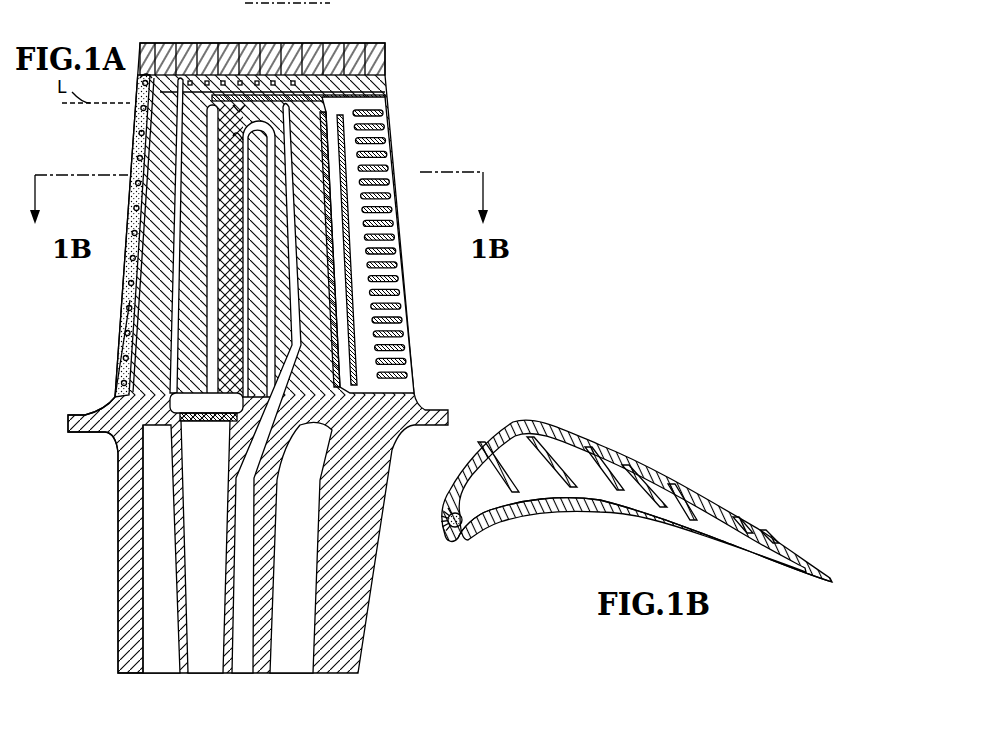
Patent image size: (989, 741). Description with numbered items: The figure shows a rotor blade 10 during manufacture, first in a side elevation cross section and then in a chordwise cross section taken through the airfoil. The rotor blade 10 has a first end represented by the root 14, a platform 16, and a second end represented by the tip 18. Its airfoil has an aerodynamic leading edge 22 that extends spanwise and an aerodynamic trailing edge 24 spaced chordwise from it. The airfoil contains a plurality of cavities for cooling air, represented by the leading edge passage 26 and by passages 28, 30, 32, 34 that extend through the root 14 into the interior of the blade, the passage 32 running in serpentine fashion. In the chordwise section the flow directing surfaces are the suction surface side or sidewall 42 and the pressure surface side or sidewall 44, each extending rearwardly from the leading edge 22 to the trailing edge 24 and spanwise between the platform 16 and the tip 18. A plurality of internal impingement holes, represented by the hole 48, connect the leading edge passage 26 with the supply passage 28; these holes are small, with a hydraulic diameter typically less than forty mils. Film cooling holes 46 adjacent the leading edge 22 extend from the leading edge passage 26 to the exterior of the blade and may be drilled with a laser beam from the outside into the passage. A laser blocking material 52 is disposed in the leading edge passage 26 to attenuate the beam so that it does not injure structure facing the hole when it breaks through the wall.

In FIG. 1A, the rotor blade 10 is at (438, 54).
In FIG. 1A, the root 14 is at (118, 538).
In FIG. 1A, the platform 16 is at (68, 413).
In FIG. 1A, the tip 18 is at (362, 43).
In FIG. 1A, the aerodynamic leading edge 22 is at (118, 290).
In FIG. 1A, the aerodynamic trailing edge 24 is at (410, 290).
In FIG. 1A, the leading edge passage 26 is at (116, 370).
In FIG. 1A, the supply passage 28 is at (166, 658).
In FIG. 1A, the passage 30 is at (205, 658).
In FIG. 1A, the passage 32 is at (245, 658).
In FIG. 1A, the passage 34 is at (295, 660).
In FIG. 1B, the suction surface side or sidewall 42 is at (580, 432).
In FIG. 1B, the pressure surface side or sidewall 44 is at (605, 505).
In FIG. 1A, the film cooling holes 46 is at (139, 170).
In FIG. 1B, the film cooling holes 46 is at (452, 535).
In FIG. 1A, the impingement hole 48 is at (148, 72).
In FIG. 1B, the impingement hole 48 is at (485, 490).
In FIG. 1A, the laser blocking material 52 is at (136, 117).
In FIG. 1B, the laser blocking material 52 is at (450, 517).